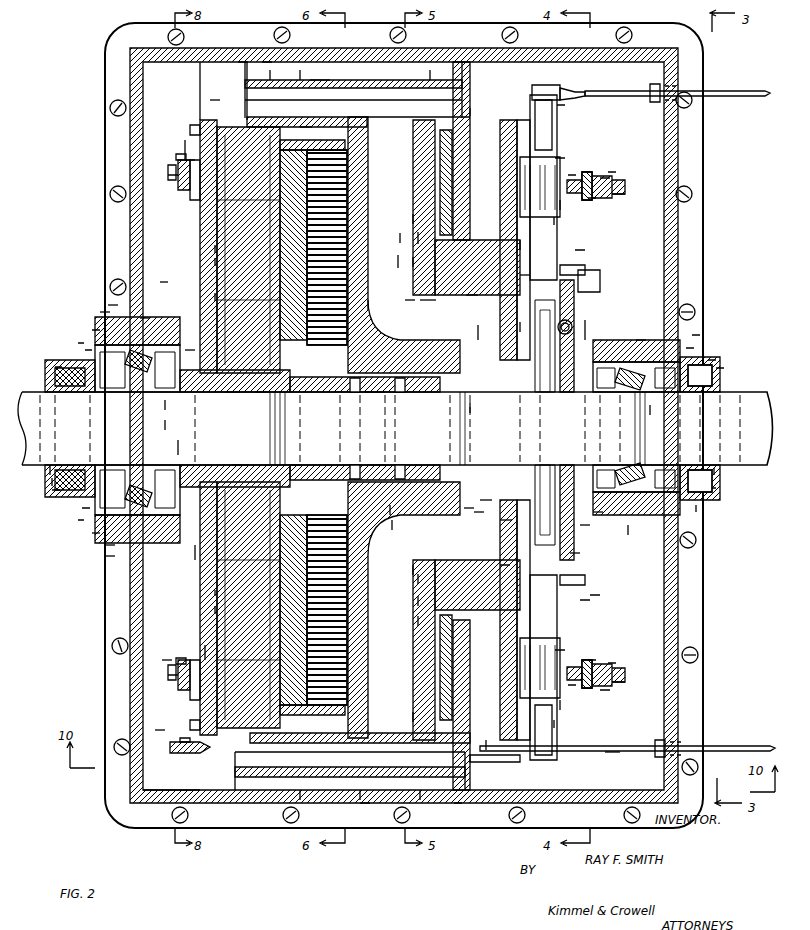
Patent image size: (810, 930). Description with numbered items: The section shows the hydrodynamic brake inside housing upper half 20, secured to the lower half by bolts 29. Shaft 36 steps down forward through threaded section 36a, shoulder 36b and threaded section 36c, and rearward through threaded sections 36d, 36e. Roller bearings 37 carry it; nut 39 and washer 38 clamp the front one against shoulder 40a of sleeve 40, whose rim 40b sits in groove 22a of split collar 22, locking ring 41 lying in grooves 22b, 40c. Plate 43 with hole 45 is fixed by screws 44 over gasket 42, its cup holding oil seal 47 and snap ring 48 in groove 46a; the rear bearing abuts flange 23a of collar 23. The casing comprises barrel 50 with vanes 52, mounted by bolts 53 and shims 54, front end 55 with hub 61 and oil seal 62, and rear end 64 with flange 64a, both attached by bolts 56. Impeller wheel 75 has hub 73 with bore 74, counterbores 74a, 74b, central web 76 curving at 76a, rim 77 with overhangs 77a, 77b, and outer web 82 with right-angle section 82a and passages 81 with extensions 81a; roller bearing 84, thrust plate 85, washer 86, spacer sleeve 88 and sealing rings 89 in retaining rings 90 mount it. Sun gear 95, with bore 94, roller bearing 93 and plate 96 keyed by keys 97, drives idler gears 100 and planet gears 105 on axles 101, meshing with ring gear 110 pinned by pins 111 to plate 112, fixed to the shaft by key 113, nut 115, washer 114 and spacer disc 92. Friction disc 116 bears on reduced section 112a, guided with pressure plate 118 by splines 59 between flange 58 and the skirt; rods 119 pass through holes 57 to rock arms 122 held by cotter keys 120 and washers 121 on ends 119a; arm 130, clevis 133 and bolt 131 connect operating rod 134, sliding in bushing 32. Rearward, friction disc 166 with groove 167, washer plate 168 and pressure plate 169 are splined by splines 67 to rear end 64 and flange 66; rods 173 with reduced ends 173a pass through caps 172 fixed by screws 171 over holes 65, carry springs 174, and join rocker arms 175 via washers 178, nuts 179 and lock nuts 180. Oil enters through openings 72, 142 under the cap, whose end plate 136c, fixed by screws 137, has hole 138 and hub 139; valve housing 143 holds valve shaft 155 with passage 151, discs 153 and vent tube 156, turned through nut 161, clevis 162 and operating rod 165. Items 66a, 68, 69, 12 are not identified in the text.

The upper half of housing 20 is at (130, 150).
The bolts 29 is at (690, 186).
The arm 130 is at (165, 800).
The shaft 36 is at (335, 435).
The threaded section 36a is at (220, 441).
The shoulder 36b is at (165, 405).
The threaded section 36c is at (165, 425).
The threaded section 36d is at (470, 408).
The threaded section 36e is at (650, 410).
The oil seal 62 is at (178, 448).
The central hole 45 is at (50, 392).
The sleeve 40 is at (172, 520).
The internal shoulder 40a is at (145, 318).
The central rim 40b is at (112, 305).
The groove 40c is at (110, 548).
The split collar 22 is at (105, 312).
The cylindrical groove 22a is at (195, 552).
The internal groove 22b is at (110, 556).
The plate 43 is at (95, 330).
The screws 44 is at (80, 345).
The internal groove 46a is at (58, 368).
The oil seal 47 is at (50, 470).
The snap ring 48 is at (52, 482).
The washer 38 is at (88, 350).
The nut 39 is at (85, 510).
The ring gasket 42 is at (95, 535).
The locking ring 41 is at (163, 282).
The hub 61 is at (188, 350).
The front end 55 is at (200, 268).
The bolts 56 is at (245, 85).
The central barrel 50 is at (320, 80).
The vanes 52 is at (362, 80).
The bolts 53 is at (265, 62).
The shims 54 is at (242, 62).
The idler gears 100 is at (215, 577).
The axles 101 is at (215, 593).
The cylindrical rotatable plate 112 is at (215, 610).
The reduced section 112a is at (215, 249).
The circular plate 96 is at (215, 262).
The keys 97 is at (215, 297).
The planet gears 105 is at (315, 200).
The annular friction disc 116 is at (312, 170).
The flange 58 is at (312, 672).
The pins 111 is at (305, 126).
The roller bearing 93 is at (322, 388).
The spacer disc 92 is at (295, 465).
The axial bore 94 is at (298, 393).
The spacer sleeve 88 is at (378, 465).
The oil sealing ring 89 is at (375, 392).
The key 113 is at (262, 392).
The washer 114 is at (232, 392).
The nut 115 is at (240, 446).
The ring gear 110 is at (365, 124).
The impeller wheel 75 is at (370, 170).
The central web 76 is at (400, 262).
The curved portion 76a is at (410, 300).
The sun gear 95 is at (400, 238).
The retaining ring 90 is at (372, 305).
The hub 73 is at (428, 300).
The right angle section 82a is at (472, 295).
The enlarged opening 142 is at (478, 332).
The axial bore 74 is at (395, 510).
The counterbore 74a is at (478, 515).
The counterbore 74b is at (395, 525).
The roller bearing 84 is at (470, 512).
The washer 86 is at (486, 505).
The opening 72 is at (505, 525).
The flange 66 is at (505, 565).
The piston skirt 66a is at (418, 238).
The cylinder 69 is at (415, 570).
The annular friction disc 166 is at (418, 601).
The groove 167 is at (418, 621).
The rim 77 is at (410, 128).
The overhang 77a is at (470, 112).
The overhang 77b is at (215, 105).
The passages 81 is at (413, 153).
The right angle extensions 81a is at (413, 186).
The annular pressure plate 169 is at (413, 203).
The outer web 82 is at (413, 219).
The cylinder wall 68 is at (413, 262).
The annular washer plate 168 is at (413, 717).
The rear end 64 is at (520, 758).
The perimetrical flange 64a is at (470, 95).
The splines 67 is at (478, 125).
The section line 12 is at (491, 308).
The thrust plate 85 is at (520, 328).
The air vent tube 156 is at (525, 280).
The holes 65 is at (530, 125).
The nut 161 is at (560, 92).
The clevis 162 is at (590, 94).
The operating rod 165 is at (732, 93).
The valve shaft 155 is at (565, 108).
The bushing 32 is at (660, 96).
The operating rod 134 is at (612, 752).
The flanged caps 172 is at (560, 158).
The rocker arms 175 is at (612, 172).
The rods 173 is at (572, 175).
The washers 178 is at (605, 178).
The nuts 179 is at (612, 185).
The lock nuts 180 is at (600, 200).
The coiled compression springs 174 is at (562, 205).
The reduced ends 173a is at (592, 200).
The screws 171 is at (558, 222).
The discs 153 is at (580, 255).
The machine screws 137 is at (580, 270).
The end plate 136c is at (585, 295).
The valve housing 143 is at (575, 555).
The hub 139 is at (585, 530).
The central hole 138 is at (545, 505).
The passage 151 is at (545, 392).
The roller bearings 37 is at (640, 340).
The split collar 23 is at (658, 340).
The internal flange 23a is at (598, 515).
The annular pressure plate 118 is at (190, 140).
The rods 119 is at (175, 208).
The reduced ends 119a is at (190, 160).
The cotter keys 120 is at (175, 190).
The washers 121 is at (168, 665).
The rock arms 122 is at (180, 160).
The holes 57 is at (188, 195).
The splines 59 is at (215, 118).
The bolt 131 is at (160, 735).
The clevis 133 is at (190, 760).